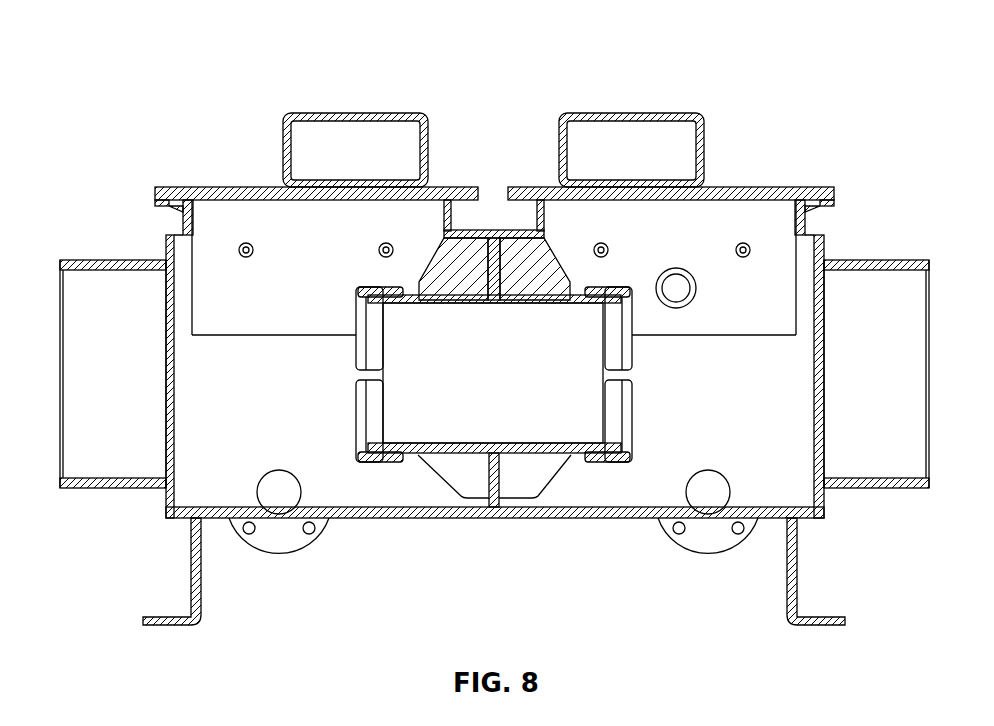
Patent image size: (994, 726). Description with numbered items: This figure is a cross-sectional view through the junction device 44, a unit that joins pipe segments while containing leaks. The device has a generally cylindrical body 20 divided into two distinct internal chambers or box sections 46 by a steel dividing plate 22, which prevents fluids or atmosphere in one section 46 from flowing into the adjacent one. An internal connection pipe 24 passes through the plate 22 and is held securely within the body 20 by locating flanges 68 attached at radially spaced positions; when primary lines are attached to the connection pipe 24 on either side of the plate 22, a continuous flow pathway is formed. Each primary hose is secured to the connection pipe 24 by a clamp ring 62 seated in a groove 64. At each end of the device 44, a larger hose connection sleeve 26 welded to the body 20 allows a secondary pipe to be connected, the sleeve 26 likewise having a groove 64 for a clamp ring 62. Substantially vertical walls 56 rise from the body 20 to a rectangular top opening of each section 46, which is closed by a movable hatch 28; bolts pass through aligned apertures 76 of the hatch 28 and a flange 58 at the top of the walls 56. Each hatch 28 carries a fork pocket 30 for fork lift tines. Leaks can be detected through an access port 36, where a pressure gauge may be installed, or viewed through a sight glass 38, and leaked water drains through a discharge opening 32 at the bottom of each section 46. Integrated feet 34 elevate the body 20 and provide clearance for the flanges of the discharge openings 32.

The body 20 is at (400, 518).
The dividing plate 22 is at (485, 503).
The connection pipe 24 is at (417, 397).
The hose connection sleeve 26 is at (90, 421).
The hatch 28 is at (262, 187).
The fork pocket 30 is at (343, 113).
The discharge opening 32 is at (285, 510).
The feet 34 is at (188, 567).
The access port 36 is at (245, 243).
The sight glass 38 is at (672, 292).
The junction device 44 is at (738, 72).
The box section 46 is at (187, 487).
The wall 56 is at (327, 212).
The flange 58 is at (162, 202).
The clamp ring 62 is at (367, 418).
The groove 64 is at (77, 490).
The locating flange 68 is at (470, 268).
The aperture 76 is at (165, 190).